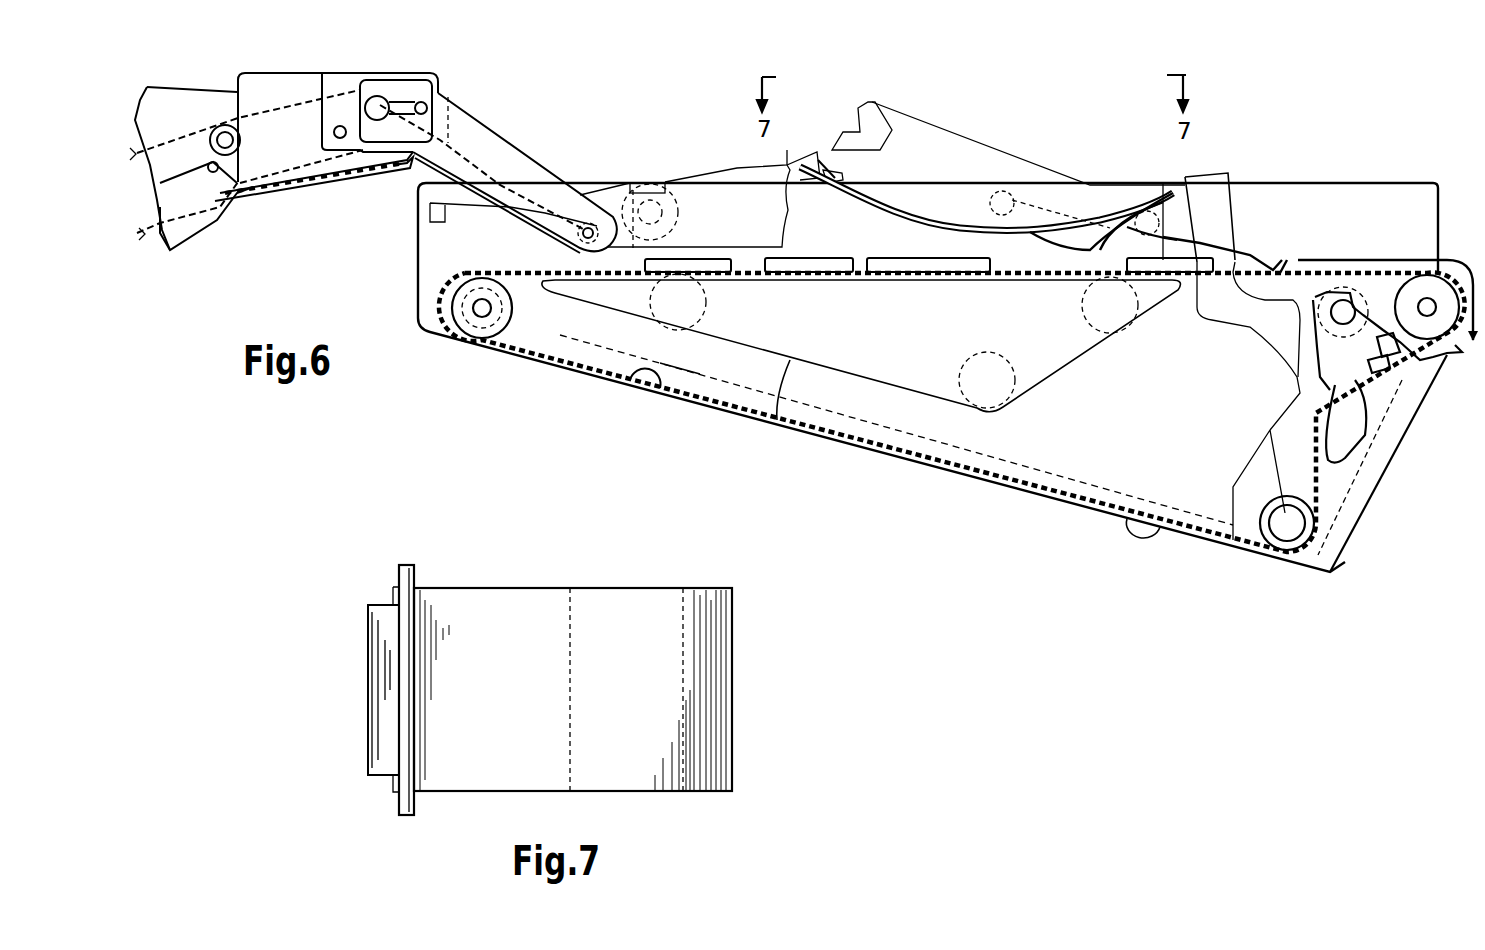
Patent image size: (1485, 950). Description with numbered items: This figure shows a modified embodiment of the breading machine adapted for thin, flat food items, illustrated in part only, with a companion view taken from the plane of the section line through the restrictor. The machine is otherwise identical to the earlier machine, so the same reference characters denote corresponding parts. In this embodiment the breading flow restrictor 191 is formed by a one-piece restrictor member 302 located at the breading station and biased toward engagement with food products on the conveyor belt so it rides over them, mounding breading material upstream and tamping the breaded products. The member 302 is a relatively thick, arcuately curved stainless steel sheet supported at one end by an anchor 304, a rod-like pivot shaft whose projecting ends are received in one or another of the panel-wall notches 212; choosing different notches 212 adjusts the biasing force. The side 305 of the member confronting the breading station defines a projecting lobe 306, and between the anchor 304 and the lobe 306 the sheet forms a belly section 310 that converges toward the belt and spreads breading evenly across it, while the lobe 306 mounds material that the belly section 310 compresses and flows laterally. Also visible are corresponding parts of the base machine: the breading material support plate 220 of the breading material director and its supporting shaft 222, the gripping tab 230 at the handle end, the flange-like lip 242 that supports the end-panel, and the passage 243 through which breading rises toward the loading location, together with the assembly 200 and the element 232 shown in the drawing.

In FIG. 6, the breading flow restrictor 191 is at (965, 195).
In FIG. 6, the drive housing assembly 200 is at (866, 453).
In FIG. 6, the panel-wall notches 212 is at (840, 170).
In FIG. 6, the breading material support plate 220 is at (1050, 503).
In FIG. 6, the shaft 222 is at (937, 359).
In FIG. 6, the gripping tab 230 is at (1219, 406).
In FIG. 6, the guide rail 232 is at (678, 398).
In FIG. 6, the flange-like lip 242 is at (787, 363).
In FIG. 6, the passage 243 is at (625, 374).
In FIG. 6, the restrictor member 302 is at (923, 217).
In FIG. 7, the restrictor member 302 is at (640, 665).
In FIG. 6, the anchor 304 is at (826, 165).
In FIG. 7, the anchor 304 is at (422, 585).
In FIG. 6, the side 305 is at (957, 242).
In FIG. 6, the lobe 306 is at (1163, 225).
In FIG. 7, the lobe 306 is at (632, 767).
In FIG. 6, the belly section 310 is at (993, 247).